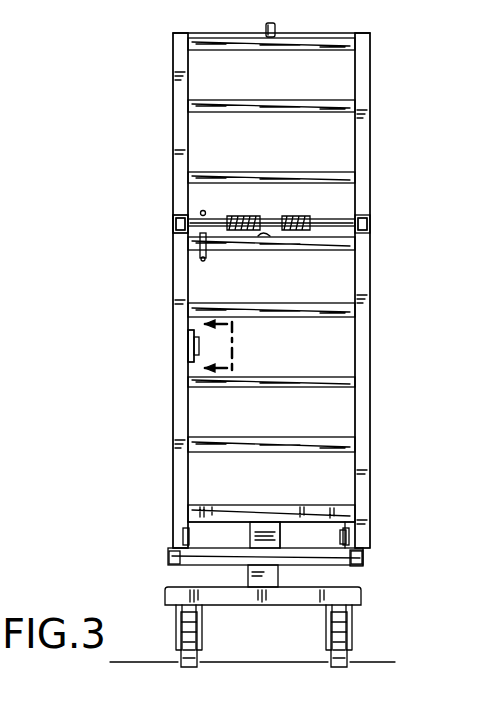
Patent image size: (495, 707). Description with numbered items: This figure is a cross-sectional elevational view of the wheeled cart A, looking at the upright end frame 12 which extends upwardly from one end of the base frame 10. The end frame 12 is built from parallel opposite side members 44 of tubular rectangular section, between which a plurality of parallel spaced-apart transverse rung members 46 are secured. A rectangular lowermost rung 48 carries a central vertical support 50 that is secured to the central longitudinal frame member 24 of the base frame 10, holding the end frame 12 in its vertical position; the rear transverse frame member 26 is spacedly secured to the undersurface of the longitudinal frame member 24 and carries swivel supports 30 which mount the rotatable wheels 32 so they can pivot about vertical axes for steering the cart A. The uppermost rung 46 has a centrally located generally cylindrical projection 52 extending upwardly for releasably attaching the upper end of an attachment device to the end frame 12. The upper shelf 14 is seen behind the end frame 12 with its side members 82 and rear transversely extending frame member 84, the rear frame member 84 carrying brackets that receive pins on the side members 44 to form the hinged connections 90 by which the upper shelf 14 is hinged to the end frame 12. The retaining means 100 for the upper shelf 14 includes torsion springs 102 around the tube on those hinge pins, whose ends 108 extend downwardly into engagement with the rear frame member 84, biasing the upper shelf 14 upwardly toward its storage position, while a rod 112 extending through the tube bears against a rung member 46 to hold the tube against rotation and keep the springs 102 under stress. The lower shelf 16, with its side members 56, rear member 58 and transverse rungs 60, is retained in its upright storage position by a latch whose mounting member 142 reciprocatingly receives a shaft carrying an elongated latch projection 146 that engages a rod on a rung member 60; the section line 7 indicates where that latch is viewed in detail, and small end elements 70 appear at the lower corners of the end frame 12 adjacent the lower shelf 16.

The base frame 10 is at (290, 612).
The upright end frame 12 is at (385, 362).
The upper shelf 14 is at (172, 233).
The lower shelf 16 is at (382, 556).
The central longitudinal frame member 24 is at (280, 580).
The rear transverse frame member 26 is at (358, 600).
The swivel supports 30 is at (182, 628).
The rotatable wheels 32 is at (178, 658).
The side members 44 is at (185, 408).
The transverse rung members 46 is at (350, 40).
The lowermost rung 48 is at (352, 515).
The central vertical support 50 is at (252, 527).
The cylindrical projection 52 is at (276, 28).
The side members 56 is at (170, 558).
The rear member 58 is at (312, 550).
The transverse rungs 60 is at (282, 540).
The end blocks 70 is at (183, 535).
The side members 82 is at (175, 224).
The rear transversely extending frame member 84 is at (352, 244).
The hinged connections 90 is at (180, 214).
The shaft 100 is at (225, 217).
The torsion springs 102 is at (297, 216).
The other ends of the springs 108 is at (292, 240).
The rod 112 is at (200, 252).
The mounting member 142 is at (194, 346).
The latch projection 146 is at (190, 332).
The section line 7- 7 is at (232, 348).
The wheeled cart A is at (378, 130).